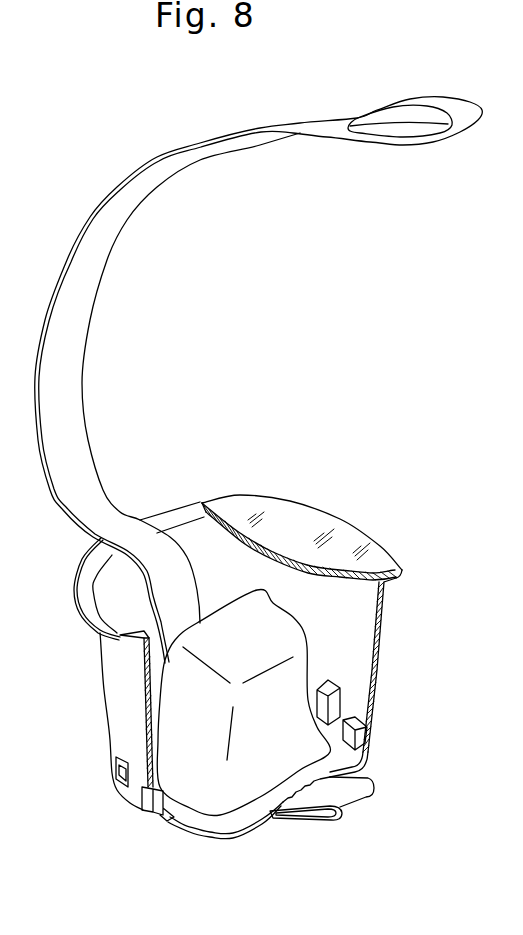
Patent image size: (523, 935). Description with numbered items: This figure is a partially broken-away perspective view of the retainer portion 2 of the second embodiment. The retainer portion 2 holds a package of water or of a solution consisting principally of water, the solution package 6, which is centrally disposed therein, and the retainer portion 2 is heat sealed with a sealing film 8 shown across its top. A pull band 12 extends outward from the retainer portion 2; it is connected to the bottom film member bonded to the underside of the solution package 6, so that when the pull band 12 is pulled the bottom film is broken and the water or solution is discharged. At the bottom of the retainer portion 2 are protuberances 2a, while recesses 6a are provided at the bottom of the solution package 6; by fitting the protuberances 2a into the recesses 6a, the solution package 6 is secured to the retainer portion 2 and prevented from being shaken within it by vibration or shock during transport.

The pull band 12 is at (163, 183).
The sealing film 8 is at (310, 513).
The retainer portion 2 is at (110, 665).
The protuberances 2a is at (357, 742).
The solution package 6 is at (210, 800).
The recesses 6a is at (170, 818).